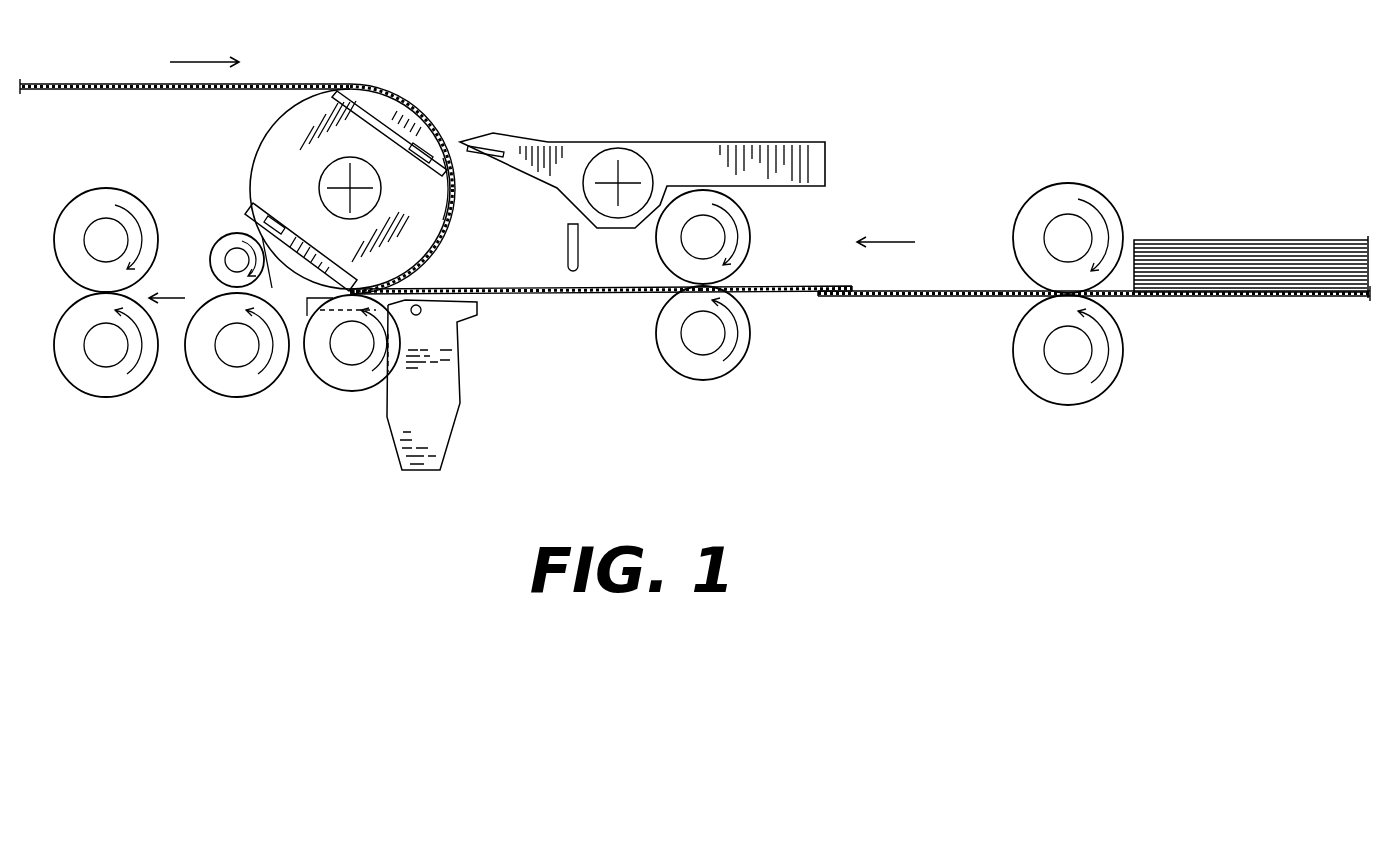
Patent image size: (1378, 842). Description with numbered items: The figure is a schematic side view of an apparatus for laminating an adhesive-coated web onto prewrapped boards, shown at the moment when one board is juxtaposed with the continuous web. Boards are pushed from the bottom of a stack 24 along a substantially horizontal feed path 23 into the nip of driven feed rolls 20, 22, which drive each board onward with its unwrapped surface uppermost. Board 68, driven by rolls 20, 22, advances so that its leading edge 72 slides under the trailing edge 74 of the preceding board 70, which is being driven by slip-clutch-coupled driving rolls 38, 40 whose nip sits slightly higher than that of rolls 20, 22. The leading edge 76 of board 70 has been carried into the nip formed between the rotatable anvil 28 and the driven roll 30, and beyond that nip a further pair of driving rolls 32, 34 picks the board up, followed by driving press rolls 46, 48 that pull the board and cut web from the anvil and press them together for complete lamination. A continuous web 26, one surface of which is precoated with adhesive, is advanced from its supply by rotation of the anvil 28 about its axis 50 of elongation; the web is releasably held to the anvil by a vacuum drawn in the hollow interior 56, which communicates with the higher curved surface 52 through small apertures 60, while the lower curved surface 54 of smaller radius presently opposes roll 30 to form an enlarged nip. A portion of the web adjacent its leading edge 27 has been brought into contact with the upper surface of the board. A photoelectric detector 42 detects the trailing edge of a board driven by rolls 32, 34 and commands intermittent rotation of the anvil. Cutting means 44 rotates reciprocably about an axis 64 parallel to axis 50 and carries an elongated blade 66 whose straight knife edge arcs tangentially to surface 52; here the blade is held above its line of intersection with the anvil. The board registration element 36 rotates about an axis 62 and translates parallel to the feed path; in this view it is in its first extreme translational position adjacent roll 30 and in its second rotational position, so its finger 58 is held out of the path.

The driven feed roll 20 is at (1096, 200).
The driven feed roll 22 is at (1098, 382).
The feed path 23 is at (166, 298).
The stack 24 is at (1194, 258).
The web 26 is at (262, 84).
The leading edge of the web 27 is at (313, 262).
The rotatable anvil 28 is at (272, 128).
The driven roll 30 is at (350, 384).
The driving roll 32 is at (224, 246).
The driving roll 34 is at (240, 390).
The board registration element 36 is at (452, 366).
The driving roll 38 is at (702, 378).
The driving roll 40 is at (738, 230).
The photoelectric detector 42 is at (580, 250).
The cutting means 44 is at (705, 171).
The driving press roll 46 is at (134, 206).
The driving press roll 48 is at (130, 380).
The axis of elongation 50 is at (327, 182).
The higher surface 52 is at (418, 97).
The lower surface 54 is at (420, 275).
The interior of anvil 56 is at (412, 208).
The finger 58 is at (333, 300).
The apertures 60 is at (446, 136).
The axis of rotation 62 is at (422, 310).
The axis 64 is at (618, 180).
The elongated blade 66 is at (468, 140).
The board 68 is at (950, 296).
The preceding board 70 is at (562, 295).
The leading edge of board 68 72 is at (822, 296).
The trailing edge of board 70 74 is at (852, 288).
The leading edge of board 70 76 is at (285, 242).